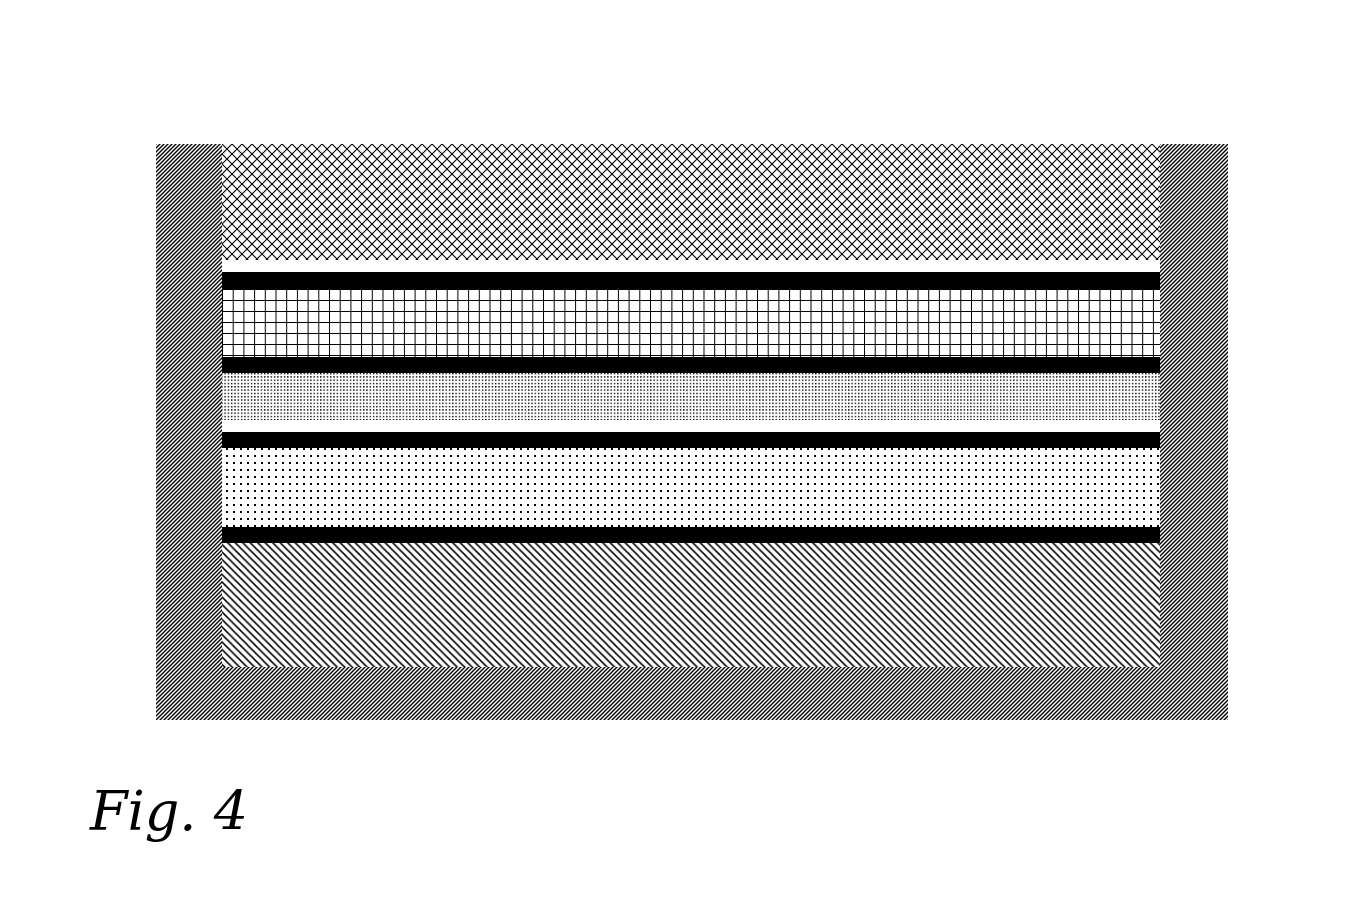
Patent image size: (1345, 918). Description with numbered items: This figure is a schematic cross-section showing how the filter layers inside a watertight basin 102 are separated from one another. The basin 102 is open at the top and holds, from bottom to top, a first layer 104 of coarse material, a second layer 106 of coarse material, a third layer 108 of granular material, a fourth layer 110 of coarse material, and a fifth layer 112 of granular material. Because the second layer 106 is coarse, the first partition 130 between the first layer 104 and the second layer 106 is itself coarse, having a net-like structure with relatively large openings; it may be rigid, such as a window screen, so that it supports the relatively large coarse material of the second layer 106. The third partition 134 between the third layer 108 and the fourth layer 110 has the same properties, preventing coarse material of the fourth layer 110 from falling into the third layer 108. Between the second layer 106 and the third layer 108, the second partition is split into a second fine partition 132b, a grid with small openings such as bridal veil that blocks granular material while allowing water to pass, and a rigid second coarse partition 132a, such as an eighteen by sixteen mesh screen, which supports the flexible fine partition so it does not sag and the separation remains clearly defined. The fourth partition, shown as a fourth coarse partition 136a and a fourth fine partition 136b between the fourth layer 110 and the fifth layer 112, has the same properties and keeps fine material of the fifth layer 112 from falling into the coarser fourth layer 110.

The basin 102 is at (1015, 698).
The first layer 104 is at (1102, 612).
The second layer 106 is at (265, 502).
The third layer 108 is at (272, 400).
The fourth layer 110 is at (260, 325).
The fifth layer 112 is at (822, 193).
The first partition 130 is at (1135, 528).
The second coarse partition 132a is at (262, 450).
The second fine partition 132b is at (1148, 422).
The third partition 134 is at (1145, 358).
The fourth coarse partition 136a is at (262, 292).
The fourth fine partition 136b is at (1147, 262).